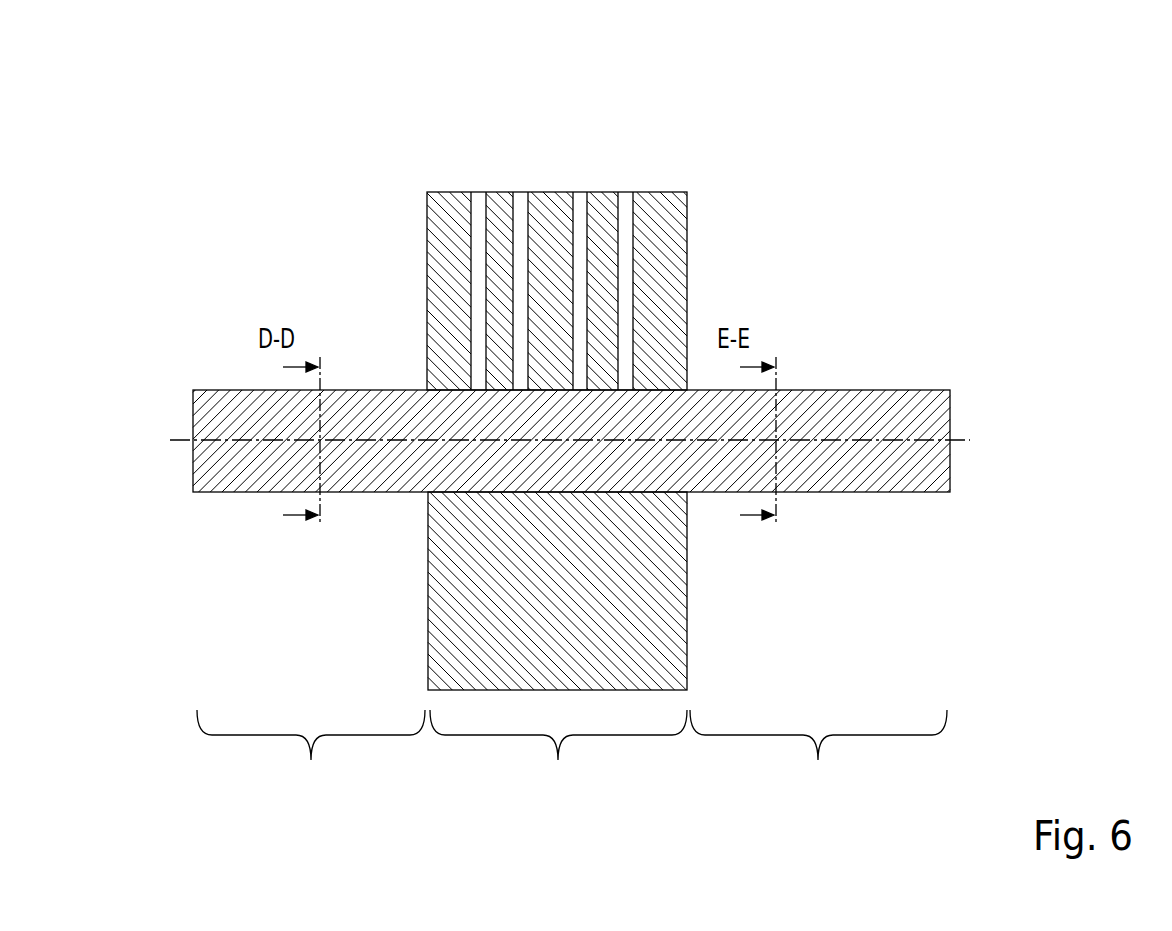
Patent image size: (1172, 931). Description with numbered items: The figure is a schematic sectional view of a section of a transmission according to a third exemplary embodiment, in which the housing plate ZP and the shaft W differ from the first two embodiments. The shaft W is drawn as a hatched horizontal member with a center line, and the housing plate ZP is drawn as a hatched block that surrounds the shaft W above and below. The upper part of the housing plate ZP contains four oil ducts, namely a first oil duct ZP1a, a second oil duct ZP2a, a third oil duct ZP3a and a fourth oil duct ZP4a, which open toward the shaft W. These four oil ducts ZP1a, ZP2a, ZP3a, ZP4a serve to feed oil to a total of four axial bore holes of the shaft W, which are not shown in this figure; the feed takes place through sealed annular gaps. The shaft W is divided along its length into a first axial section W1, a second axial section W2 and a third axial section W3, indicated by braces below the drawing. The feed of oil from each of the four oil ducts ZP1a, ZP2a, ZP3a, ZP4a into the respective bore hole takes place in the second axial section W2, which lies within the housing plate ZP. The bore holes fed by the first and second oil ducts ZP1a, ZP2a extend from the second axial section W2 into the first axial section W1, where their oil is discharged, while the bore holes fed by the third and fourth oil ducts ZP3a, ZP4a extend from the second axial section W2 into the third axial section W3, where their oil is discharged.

The shaft W is at (225, 405).
The housing plate ZP is at (445, 230).
The first oil duct ZP1a is at (478, 202).
The second oil duct ZP2a is at (519, 202).
The third oil duct ZP3a is at (579, 202).
The fourth oil duct ZP4a is at (625, 202).
The first axial section W1 is at (311, 759).
The second axial section W2 is at (558, 759).
The third axial section W3 is at (818, 759).